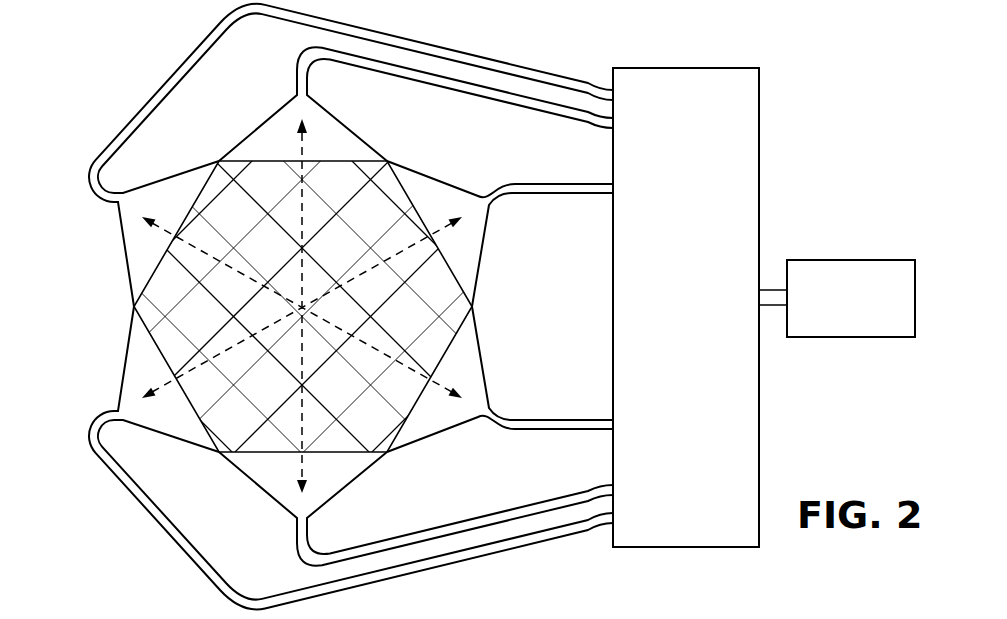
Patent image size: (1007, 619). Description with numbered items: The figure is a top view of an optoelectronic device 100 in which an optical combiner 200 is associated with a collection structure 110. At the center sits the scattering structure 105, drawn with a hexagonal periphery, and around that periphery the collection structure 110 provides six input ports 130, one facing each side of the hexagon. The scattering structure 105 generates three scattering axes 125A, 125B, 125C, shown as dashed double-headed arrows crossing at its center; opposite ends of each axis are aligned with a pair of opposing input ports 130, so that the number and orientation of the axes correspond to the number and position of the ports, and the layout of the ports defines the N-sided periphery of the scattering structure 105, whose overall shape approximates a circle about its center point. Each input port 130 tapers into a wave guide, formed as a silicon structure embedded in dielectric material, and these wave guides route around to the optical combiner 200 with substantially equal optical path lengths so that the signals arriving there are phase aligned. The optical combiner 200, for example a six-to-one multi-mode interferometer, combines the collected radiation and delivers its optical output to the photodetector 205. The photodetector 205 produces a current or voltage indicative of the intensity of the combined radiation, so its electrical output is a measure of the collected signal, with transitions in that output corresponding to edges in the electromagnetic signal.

The optoelectronic device 100 is at (126, 62).
The scattering structure 105 is at (232, 437).
The collection structure 110 is at (120, 526).
The scattering axis 125A is at (268, 152).
The scattering axis 125B is at (473, 293).
The scattering axis 125C is at (440, 360).
The input ports 130 is at (264, 92).
The optical combiner 200 is at (688, 548).
The photodetector 205 is at (852, 340).